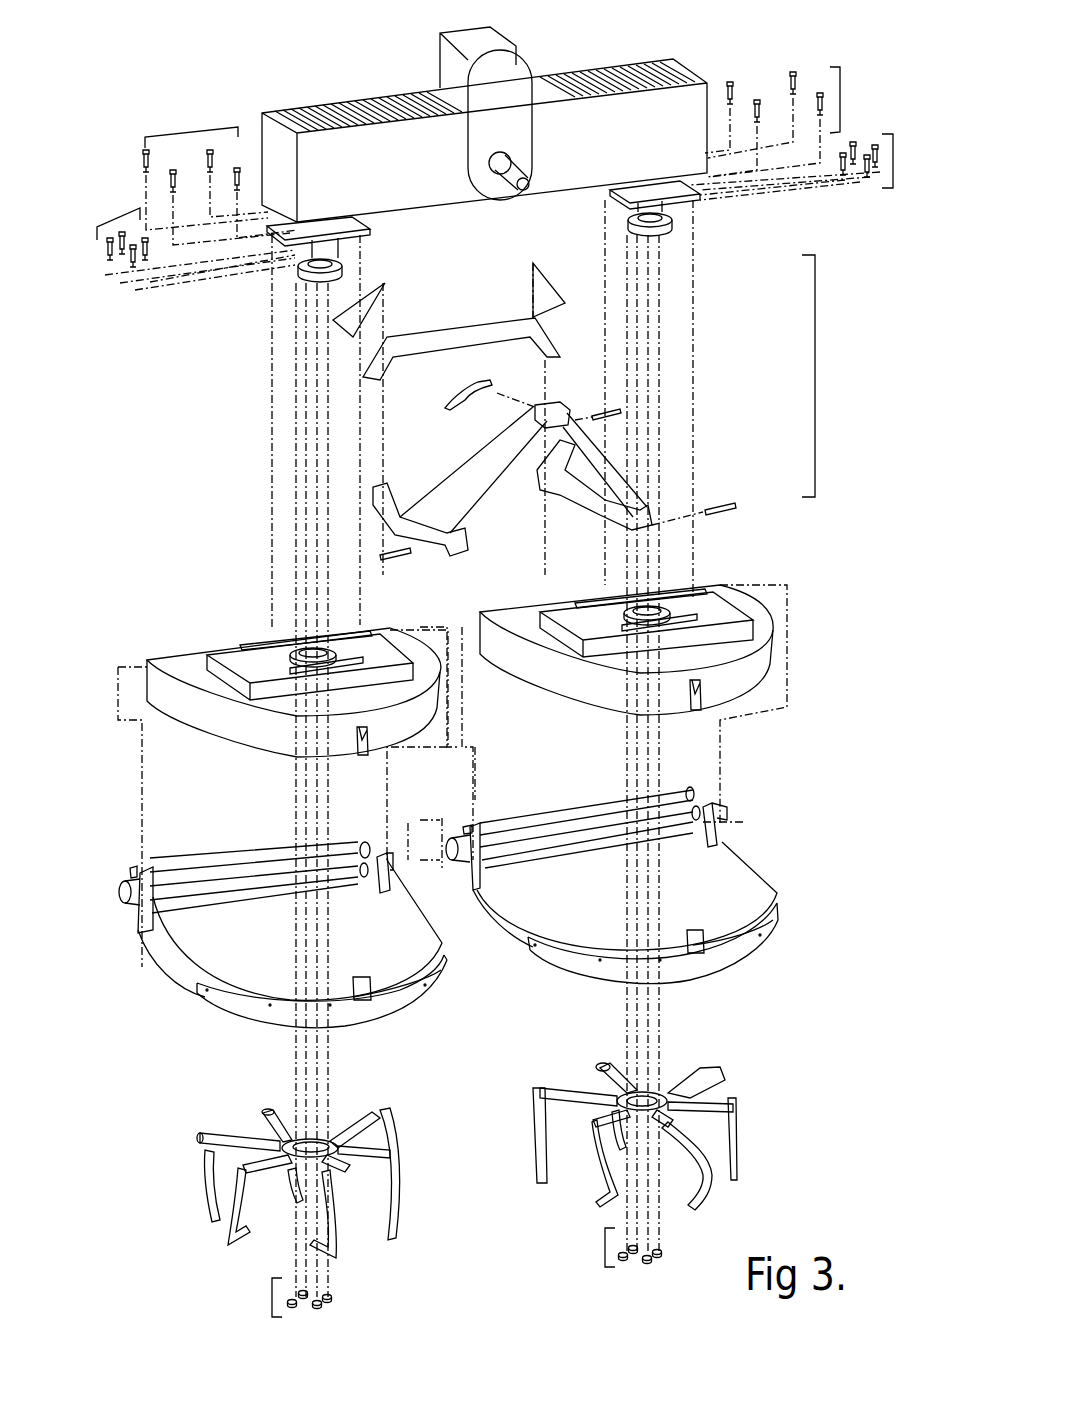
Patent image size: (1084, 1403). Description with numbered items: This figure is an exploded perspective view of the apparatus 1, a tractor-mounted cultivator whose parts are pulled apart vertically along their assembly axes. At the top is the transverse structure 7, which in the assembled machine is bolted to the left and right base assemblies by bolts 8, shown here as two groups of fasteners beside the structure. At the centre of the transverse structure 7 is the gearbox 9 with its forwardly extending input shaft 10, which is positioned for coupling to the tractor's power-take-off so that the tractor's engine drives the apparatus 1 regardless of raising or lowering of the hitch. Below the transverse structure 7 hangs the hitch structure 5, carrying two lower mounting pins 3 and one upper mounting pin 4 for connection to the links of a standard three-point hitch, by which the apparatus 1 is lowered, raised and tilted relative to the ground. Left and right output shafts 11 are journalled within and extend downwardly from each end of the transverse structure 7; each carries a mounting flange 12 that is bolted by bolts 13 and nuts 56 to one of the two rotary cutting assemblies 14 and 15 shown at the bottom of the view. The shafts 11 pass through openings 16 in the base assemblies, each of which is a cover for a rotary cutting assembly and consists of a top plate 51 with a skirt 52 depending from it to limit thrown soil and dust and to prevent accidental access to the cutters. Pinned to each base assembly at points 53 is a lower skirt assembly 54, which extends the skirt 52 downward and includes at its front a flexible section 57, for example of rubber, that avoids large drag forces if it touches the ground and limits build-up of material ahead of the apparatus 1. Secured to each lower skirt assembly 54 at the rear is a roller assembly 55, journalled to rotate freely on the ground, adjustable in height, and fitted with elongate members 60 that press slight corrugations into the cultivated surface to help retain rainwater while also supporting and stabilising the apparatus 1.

The apparatus 1 is at (152, 97).
The lower mounting pins 3 is at (380, 548).
The upper mounting pin 4 is at (567, 415).
The hitch structure 5 is at (817, 370).
The transverse structure 7 is at (687, 72).
The bolts 8 is at (195, 132).
The gearbox 9 is at (497, 37).
The input shaft 10 is at (508, 152).
The output shafts 11 is at (293, 262).
The mounting flange 12 is at (300, 281).
The bolts 13 is at (122, 213).
The rotary cutting assembly 14 is at (200, 1138).
The rotary cutting assembly 15 is at (717, 1072).
The openings 16 is at (293, 655).
The top plate 51 is at (190, 675).
The skirt 52 is at (203, 720).
The points 53 is at (480, 622).
The lower skirt assembly 54 is at (170, 950).
The roller assembly 55 is at (133, 868).
The nuts 56 is at (270, 1298).
The flexible section 57 is at (237, 1007).
The elongate members 60 is at (177, 890).